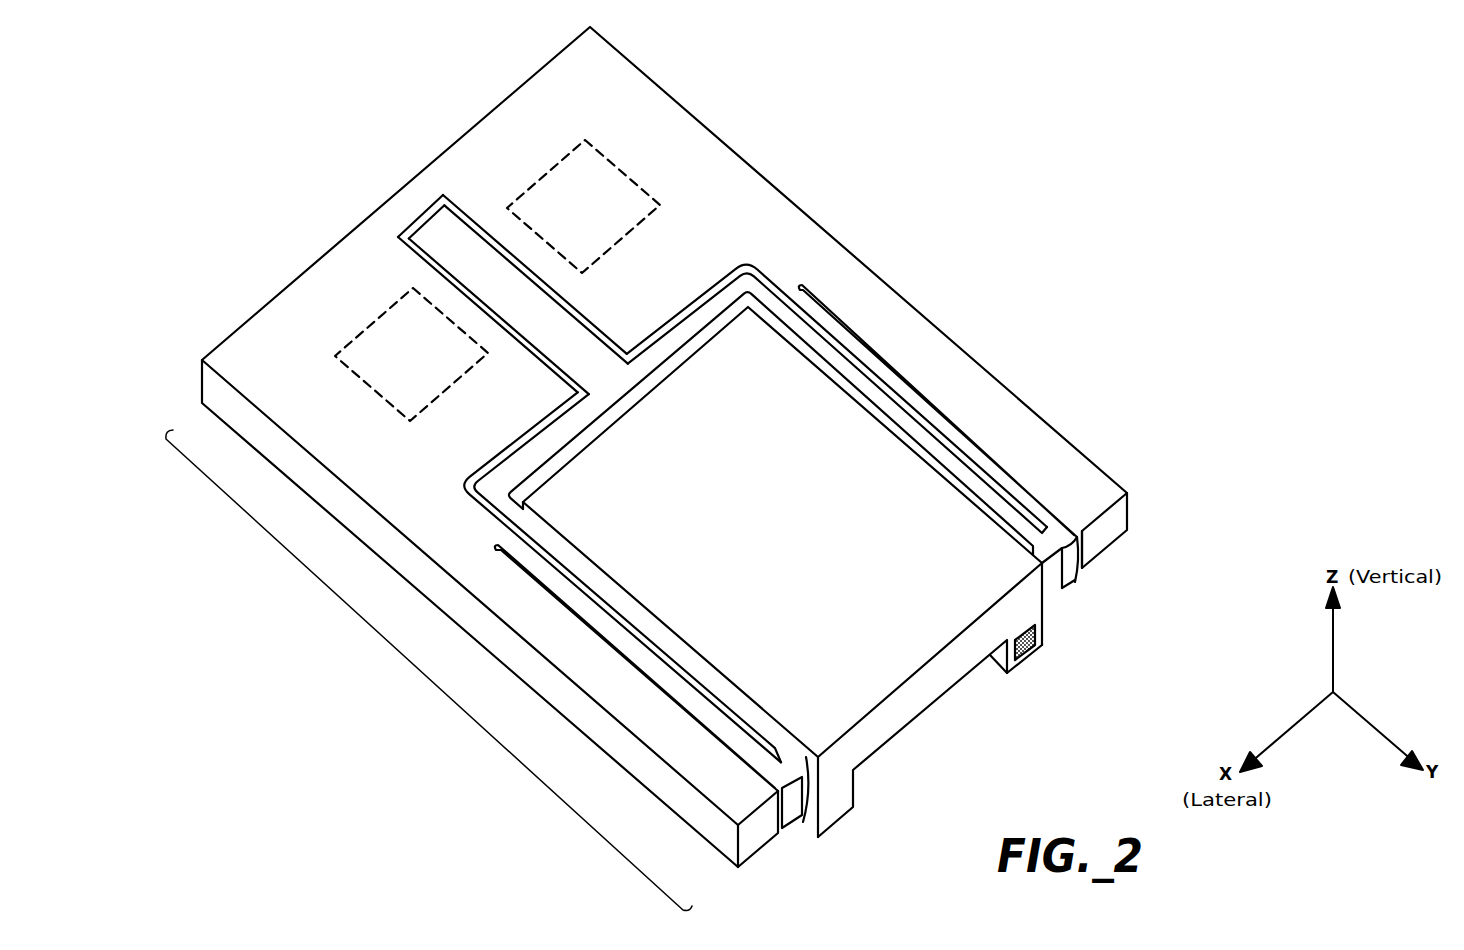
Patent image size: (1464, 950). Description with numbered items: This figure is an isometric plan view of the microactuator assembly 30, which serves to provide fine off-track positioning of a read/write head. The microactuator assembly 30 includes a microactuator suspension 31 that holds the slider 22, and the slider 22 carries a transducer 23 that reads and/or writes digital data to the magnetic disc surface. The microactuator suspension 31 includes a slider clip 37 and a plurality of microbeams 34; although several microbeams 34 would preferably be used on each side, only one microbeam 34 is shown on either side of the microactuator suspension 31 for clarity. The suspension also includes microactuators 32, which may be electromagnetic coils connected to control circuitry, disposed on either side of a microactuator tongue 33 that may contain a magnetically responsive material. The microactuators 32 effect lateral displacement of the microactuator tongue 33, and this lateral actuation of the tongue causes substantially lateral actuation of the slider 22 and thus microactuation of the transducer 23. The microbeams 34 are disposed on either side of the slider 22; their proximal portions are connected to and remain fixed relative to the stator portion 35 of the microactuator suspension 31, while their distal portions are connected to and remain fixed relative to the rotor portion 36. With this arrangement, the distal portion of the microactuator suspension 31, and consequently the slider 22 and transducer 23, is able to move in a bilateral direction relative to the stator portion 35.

The slider 22 is at (865, 692).
The transducer 23 is at (1030, 657).
The microactuator assembly 30 is at (429, 670).
The microactuator suspension 31 is at (824, 200).
The microactuators 32 is at (563, 175).
The microactuator tongue 33 is at (440, 235).
The microbeams 34 is at (850, 340).
The stator portion 35 is at (733, 184).
The rotor portion 36 is at (1085, 588).
The slider clip 37 is at (900, 410).